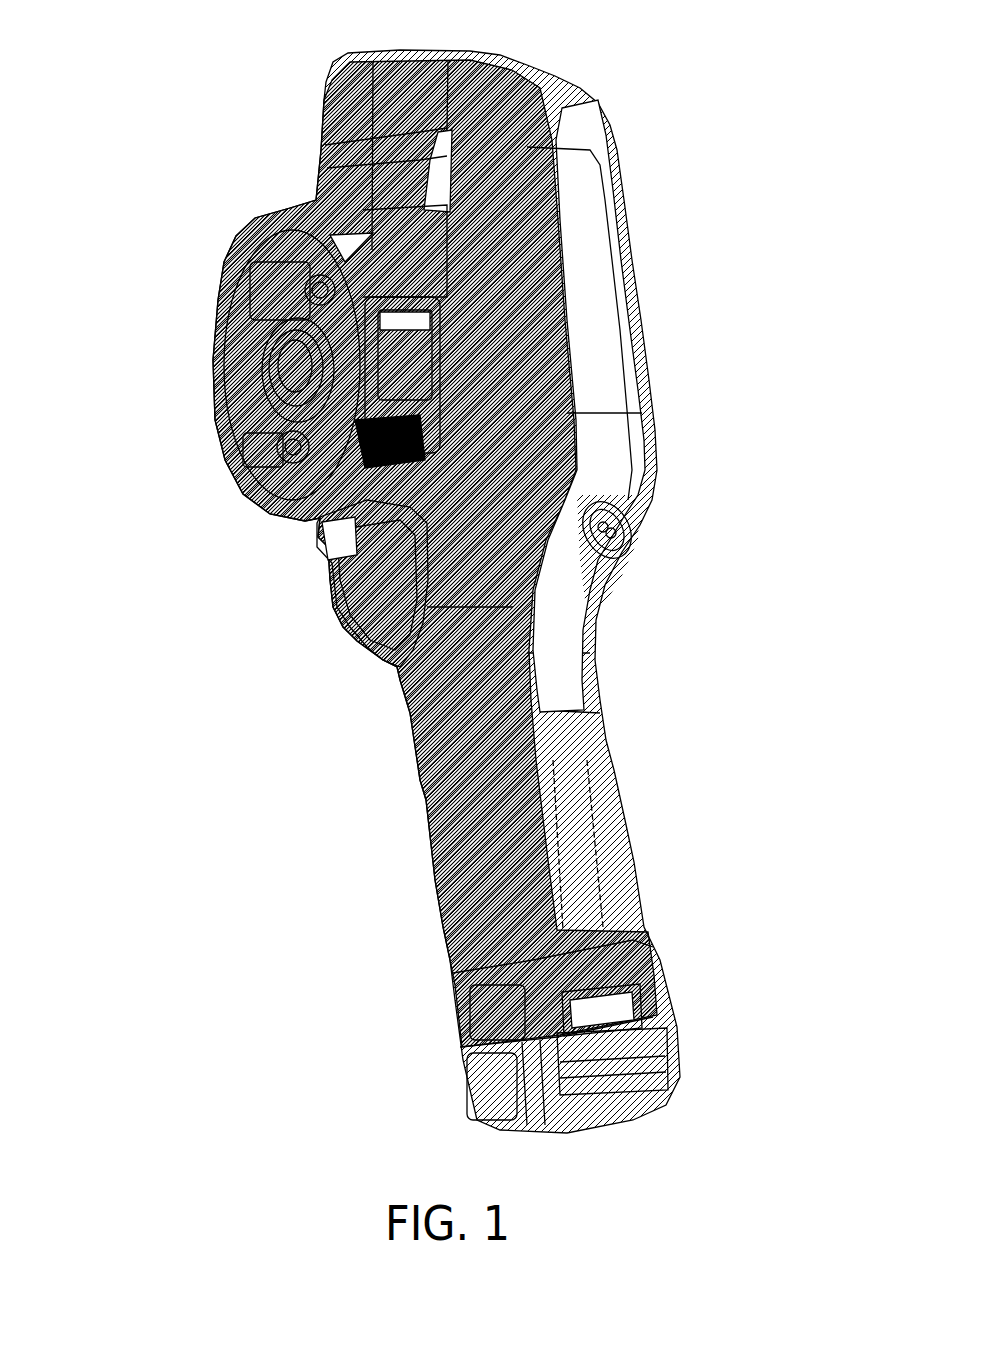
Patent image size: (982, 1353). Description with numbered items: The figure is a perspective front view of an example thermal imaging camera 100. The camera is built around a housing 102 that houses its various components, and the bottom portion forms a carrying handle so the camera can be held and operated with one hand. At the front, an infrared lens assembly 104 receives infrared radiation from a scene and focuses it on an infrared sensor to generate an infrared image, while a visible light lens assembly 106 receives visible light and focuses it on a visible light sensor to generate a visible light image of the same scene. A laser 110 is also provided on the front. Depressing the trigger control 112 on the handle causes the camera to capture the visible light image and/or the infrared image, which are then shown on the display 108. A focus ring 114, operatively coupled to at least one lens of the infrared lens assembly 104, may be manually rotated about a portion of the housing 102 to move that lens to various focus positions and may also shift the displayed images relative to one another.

The thermal imaging camera 100 is at (449, 584).
The housing 102 is at (560, 100).
The infrared lens assembly 104 is at (313, 390).
The visible light lens assembly 106 is at (307, 290).
The display 108 is at (650, 228).
The laser 110 is at (293, 458).
The trigger control 112 is at (352, 607).
The focus ring 114 is at (366, 433).